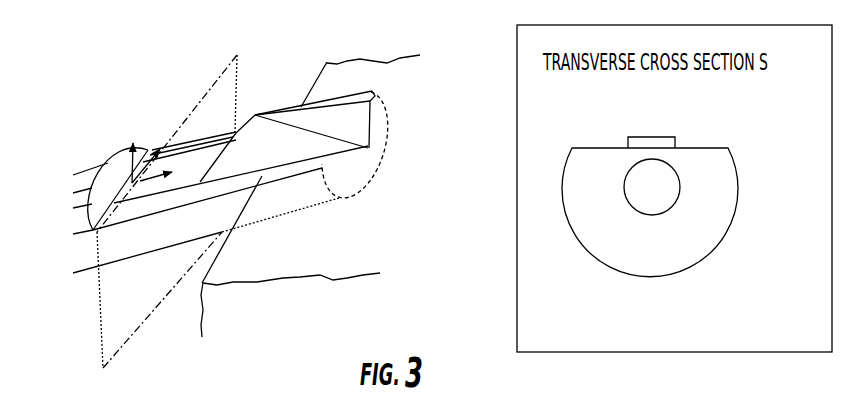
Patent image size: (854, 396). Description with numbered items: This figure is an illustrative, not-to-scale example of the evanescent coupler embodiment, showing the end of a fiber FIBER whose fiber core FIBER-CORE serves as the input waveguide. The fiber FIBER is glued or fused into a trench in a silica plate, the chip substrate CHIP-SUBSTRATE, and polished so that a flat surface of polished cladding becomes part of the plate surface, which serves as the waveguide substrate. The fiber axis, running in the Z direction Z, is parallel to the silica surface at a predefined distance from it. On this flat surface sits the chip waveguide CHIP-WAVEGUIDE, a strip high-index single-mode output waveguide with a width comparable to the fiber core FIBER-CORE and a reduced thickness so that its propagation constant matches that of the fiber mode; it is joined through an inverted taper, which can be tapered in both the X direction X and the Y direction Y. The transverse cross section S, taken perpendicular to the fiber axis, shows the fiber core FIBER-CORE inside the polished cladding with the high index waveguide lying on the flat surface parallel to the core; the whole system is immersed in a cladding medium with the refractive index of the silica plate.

The transverse cross section S is at (167, 211).
The X direction X is at (127, 151).
The Y direction Y is at (151, 152).
The Z direction Z is at (163, 170).
The fiber FIBER is at (230, 182).
The chip waveguide CHIP-WAVEGUIDE is at (377, 125).
The chip substrate CHIP-SUBSTRATE is at (310, 196).
The fiber core FIBER-CORE is at (633, 215).